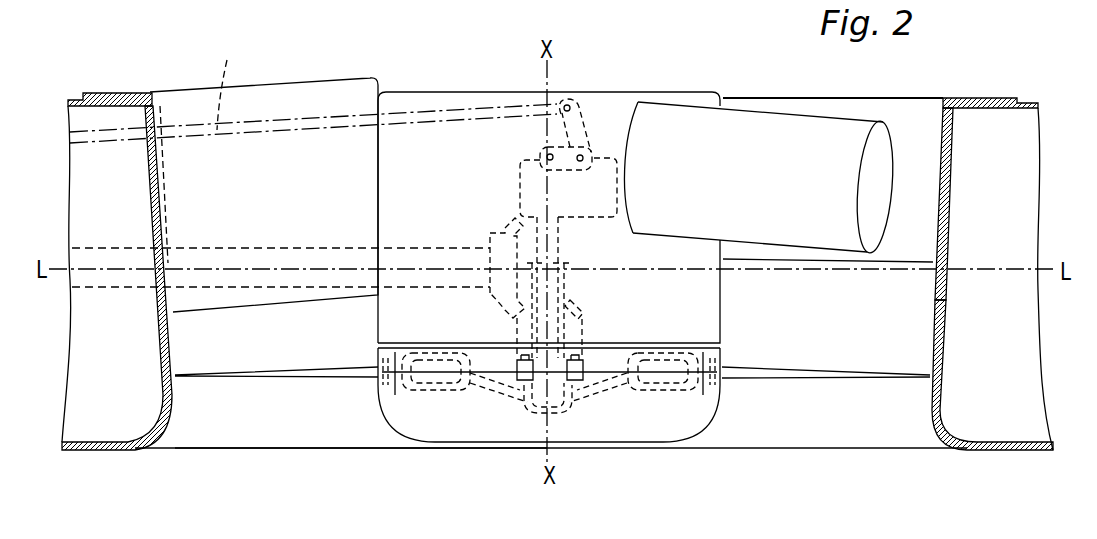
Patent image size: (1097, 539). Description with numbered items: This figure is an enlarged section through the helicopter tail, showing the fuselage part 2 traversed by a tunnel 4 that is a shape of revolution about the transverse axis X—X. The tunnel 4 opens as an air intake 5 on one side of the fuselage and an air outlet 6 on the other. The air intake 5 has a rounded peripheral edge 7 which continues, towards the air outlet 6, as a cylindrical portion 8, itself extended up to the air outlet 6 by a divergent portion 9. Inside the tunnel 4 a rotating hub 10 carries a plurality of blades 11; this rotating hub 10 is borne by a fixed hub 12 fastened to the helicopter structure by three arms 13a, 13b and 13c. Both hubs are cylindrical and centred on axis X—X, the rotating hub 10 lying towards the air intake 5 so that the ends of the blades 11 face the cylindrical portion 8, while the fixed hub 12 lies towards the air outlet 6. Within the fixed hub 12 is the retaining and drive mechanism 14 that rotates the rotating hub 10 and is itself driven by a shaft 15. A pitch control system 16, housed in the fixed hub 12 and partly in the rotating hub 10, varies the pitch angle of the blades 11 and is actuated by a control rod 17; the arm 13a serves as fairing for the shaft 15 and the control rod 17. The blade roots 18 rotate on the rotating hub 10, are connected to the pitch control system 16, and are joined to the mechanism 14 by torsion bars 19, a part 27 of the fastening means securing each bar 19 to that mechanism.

The fuselage part 2 is at (82, 163).
The tunnel 4 is at (886, 428).
The air intake 5 is at (325, 438).
The air outlet 6 is at (847, 100).
The rounded peripheral edge 7 is at (162, 423).
The cylindrical portion 8 is at (940, 348).
The divergent portion 9 is at (953, 197).
The rotating hub 10 is at (467, 430).
The blades 11 is at (287, 377).
The fixed hub 12 is at (627, 93).
The arm 13a is at (320, 95).
The arm 13b is at (770, 123).
The arm 13c is at (593, 6).
The retaining and drive mechanism 14 is at (503, 300).
The shaft 15 is at (97, 278).
The pitch control system 16 is at (580, 328).
The control rod 17 is at (227, 58).
The blade roots 18 is at (393, 427).
The torsion bars 19 is at (435, 375).
The fastening means part 27 is at (527, 402).